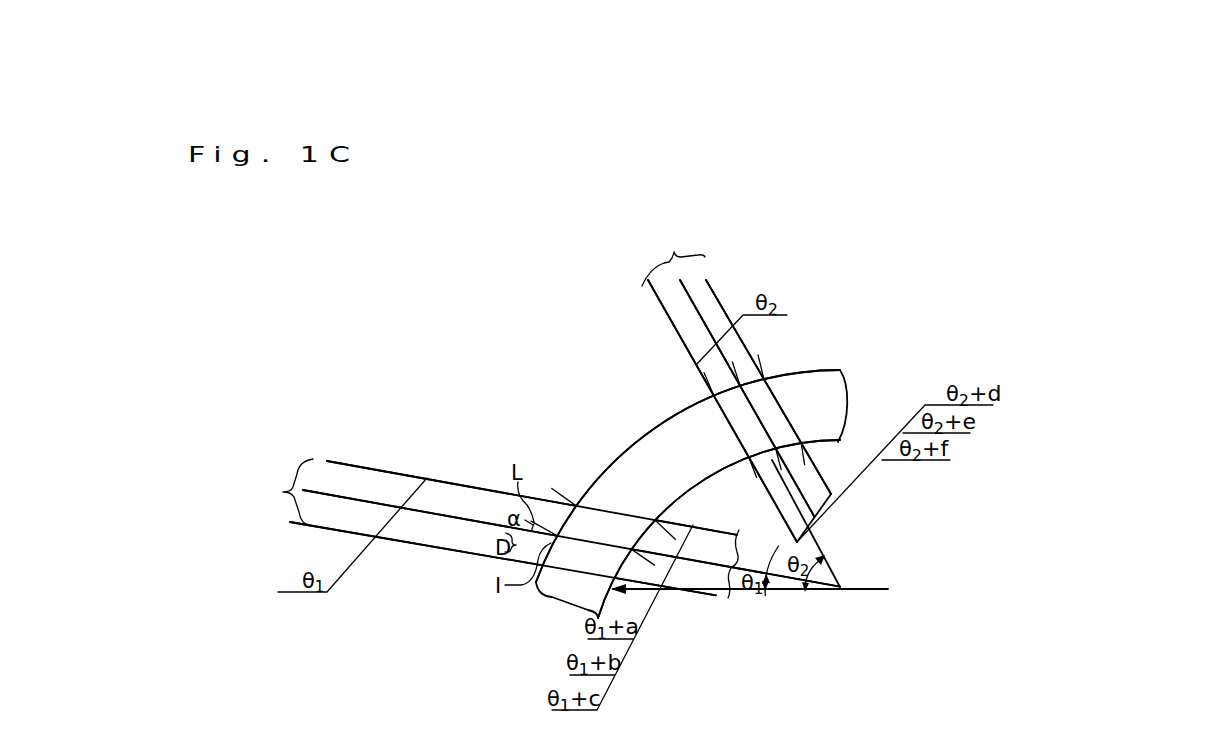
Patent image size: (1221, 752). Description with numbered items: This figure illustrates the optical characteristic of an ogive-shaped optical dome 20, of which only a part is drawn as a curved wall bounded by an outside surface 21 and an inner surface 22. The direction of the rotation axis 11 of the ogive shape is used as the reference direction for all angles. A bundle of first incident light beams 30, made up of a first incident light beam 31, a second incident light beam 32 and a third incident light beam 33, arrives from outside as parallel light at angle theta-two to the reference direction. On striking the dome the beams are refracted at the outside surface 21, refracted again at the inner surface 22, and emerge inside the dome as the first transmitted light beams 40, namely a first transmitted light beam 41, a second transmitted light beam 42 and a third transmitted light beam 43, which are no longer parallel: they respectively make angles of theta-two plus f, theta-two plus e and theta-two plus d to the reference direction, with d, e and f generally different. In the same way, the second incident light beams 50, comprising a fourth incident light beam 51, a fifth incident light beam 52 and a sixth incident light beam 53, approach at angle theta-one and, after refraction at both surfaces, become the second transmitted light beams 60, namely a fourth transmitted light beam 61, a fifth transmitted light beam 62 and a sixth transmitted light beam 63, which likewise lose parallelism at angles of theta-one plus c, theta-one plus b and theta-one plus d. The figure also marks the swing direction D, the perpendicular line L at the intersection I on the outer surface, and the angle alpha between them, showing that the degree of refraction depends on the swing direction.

The rotation axis 11 is at (888, 589).
The optical dome 20 is at (665, 452).
The outside surface 21 is at (677, 410).
The inner surface 22 is at (663, 507).
The first incident light beams 30 is at (685, 353).
The first incident light beam 31 is at (684, 345).
The second incident light beam 32 is at (703, 322).
The third incident light beam 33 is at (708, 288).
The first transmitted light beams 40 is at (826, 528).
The first transmitted light beam 41 is at (786, 515).
The second transmitted light beam 42 is at (800, 492).
The third transmitted light beam 43 is at (816, 468).
The second incident light beams 50 is at (380, 522).
The fourth incident light beam 51 is at (292, 607).
The fifth incident light beam 52 is at (420, 512).
The sixth incident light beam 53 is at (497, 492).
The second transmitted light beams 60 is at (745, 600).
The fourth transmitted light beam 61 is at (663, 593).
The fifth transmitted light beam 62 is at (680, 593).
The sixth transmitted light beam 63 is at (740, 570).